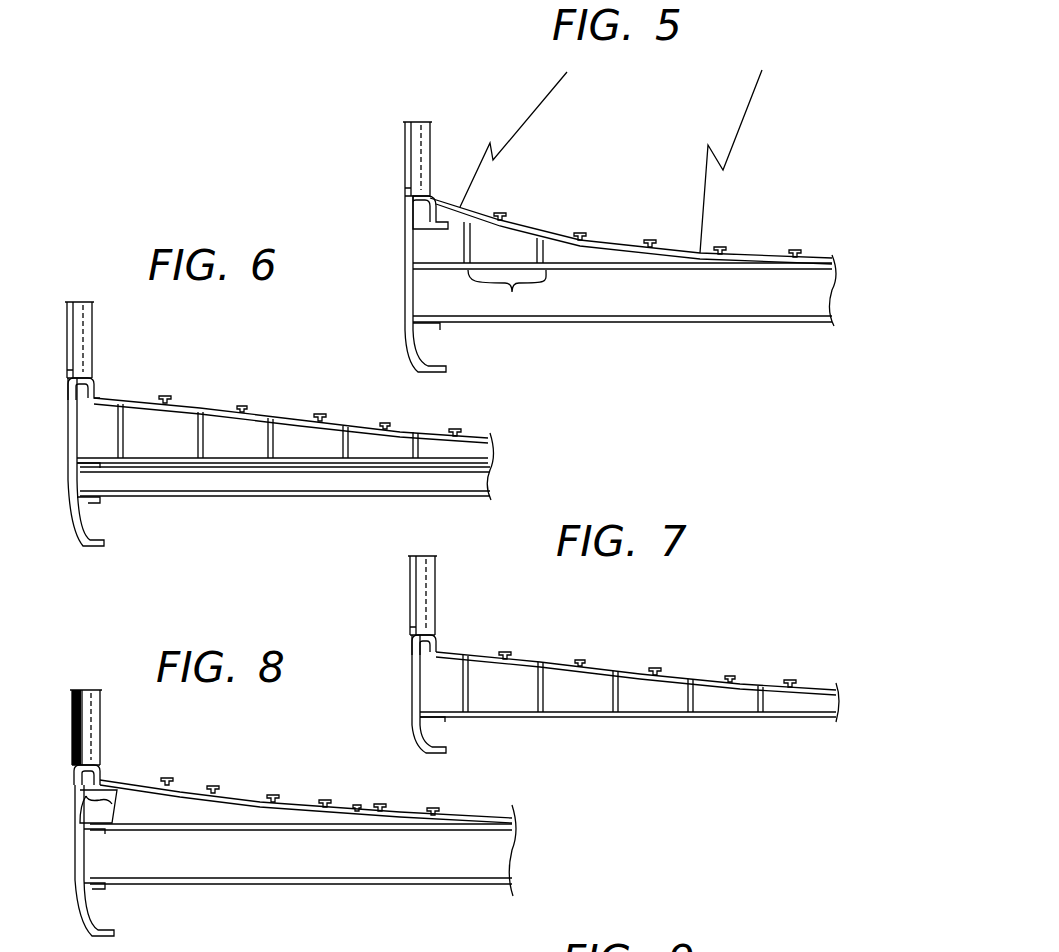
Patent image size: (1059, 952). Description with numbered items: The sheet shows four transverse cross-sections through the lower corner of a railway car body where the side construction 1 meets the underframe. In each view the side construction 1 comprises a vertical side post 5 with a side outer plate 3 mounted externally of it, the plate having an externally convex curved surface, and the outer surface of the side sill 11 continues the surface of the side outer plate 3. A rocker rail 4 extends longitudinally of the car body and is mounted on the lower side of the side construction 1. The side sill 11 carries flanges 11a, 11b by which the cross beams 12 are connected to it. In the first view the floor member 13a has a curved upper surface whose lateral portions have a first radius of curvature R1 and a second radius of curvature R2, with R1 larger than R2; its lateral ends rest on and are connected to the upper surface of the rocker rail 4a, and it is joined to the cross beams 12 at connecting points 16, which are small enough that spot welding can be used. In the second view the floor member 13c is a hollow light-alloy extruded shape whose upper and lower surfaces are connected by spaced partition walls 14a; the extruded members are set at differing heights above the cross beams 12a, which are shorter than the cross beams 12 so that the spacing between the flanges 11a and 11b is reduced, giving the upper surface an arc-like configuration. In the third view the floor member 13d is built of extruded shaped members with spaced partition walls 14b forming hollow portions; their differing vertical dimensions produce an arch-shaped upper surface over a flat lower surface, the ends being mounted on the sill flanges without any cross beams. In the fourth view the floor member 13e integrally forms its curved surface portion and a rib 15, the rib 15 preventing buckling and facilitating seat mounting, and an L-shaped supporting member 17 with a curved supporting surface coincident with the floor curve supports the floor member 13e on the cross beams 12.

In FIG. 5, the side construction 1 is at (416, 122).
In FIG. 6, the side construction 1 is at (75, 302).
In FIG. 7, the side construction 1 is at (422, 556).
In FIG. 8, the side construction 1 is at (72, 702).
In FIG. 5, the side outer plate 3 is at (405, 142).
In FIG. 6, the side outer plate 3 is at (67, 325).
In FIG. 7, the side outer plate 3 is at (410, 586).
In FIG. 8, the side outer plate 3 is at (72, 732).
In FIG. 5, the side post 5 is at (430, 140).
In FIG. 6, the side post 5 is at (92, 326).
In FIG. 7, the side post 5 is at (435, 587).
In FIG. 8, the side post 5 is at (100, 722).
In FIG. 5, the rocker rail 4a is at (405, 208).
In FIG. 6, the rocker rail 4 is at (68, 390).
In FIG. 7, the rocker rail 4 is at (412, 646).
In FIG. 8, the rocker rail 4 is at (74, 777).
In FIG. 5, the side sill 11 is at (405, 298).
In FIG. 8, the side sill 11 is at (75, 860).
In FIG. 6, the flange 11a is at (68, 436).
In FIG. 7, the flange 11b is at (412, 691).
In FIG. 5, the cross beam 12 is at (620, 322).
In FIG. 8, the cross beam 12 is at (305, 886).
In FIG. 6, the cross beam 12a is at (268, 497).
In FIG. 5, the floor member 13a is at (598, 243).
In FIG. 6, the floor member 13c is at (320, 428).
In FIG. 7, the floor member 13d is at (667, 678).
In FIG. 8, the floor member 13e is at (254, 796).
In FIG. 6, the partition wall 14a is at (130, 433).
In FIG. 7, the partition wall 14b is at (474, 714).
In FIG. 8, the rib 15 is at (328, 798).
In FIG. 5, the connecting point 16 is at (505, 267).
In FIG. 8, the supporting member 17 is at (80, 804).
In FIG. 5, the first radius of curvature R1 is at (731, 161).
In FIG. 5, the second radius of curvature R2 is at (513, 139).